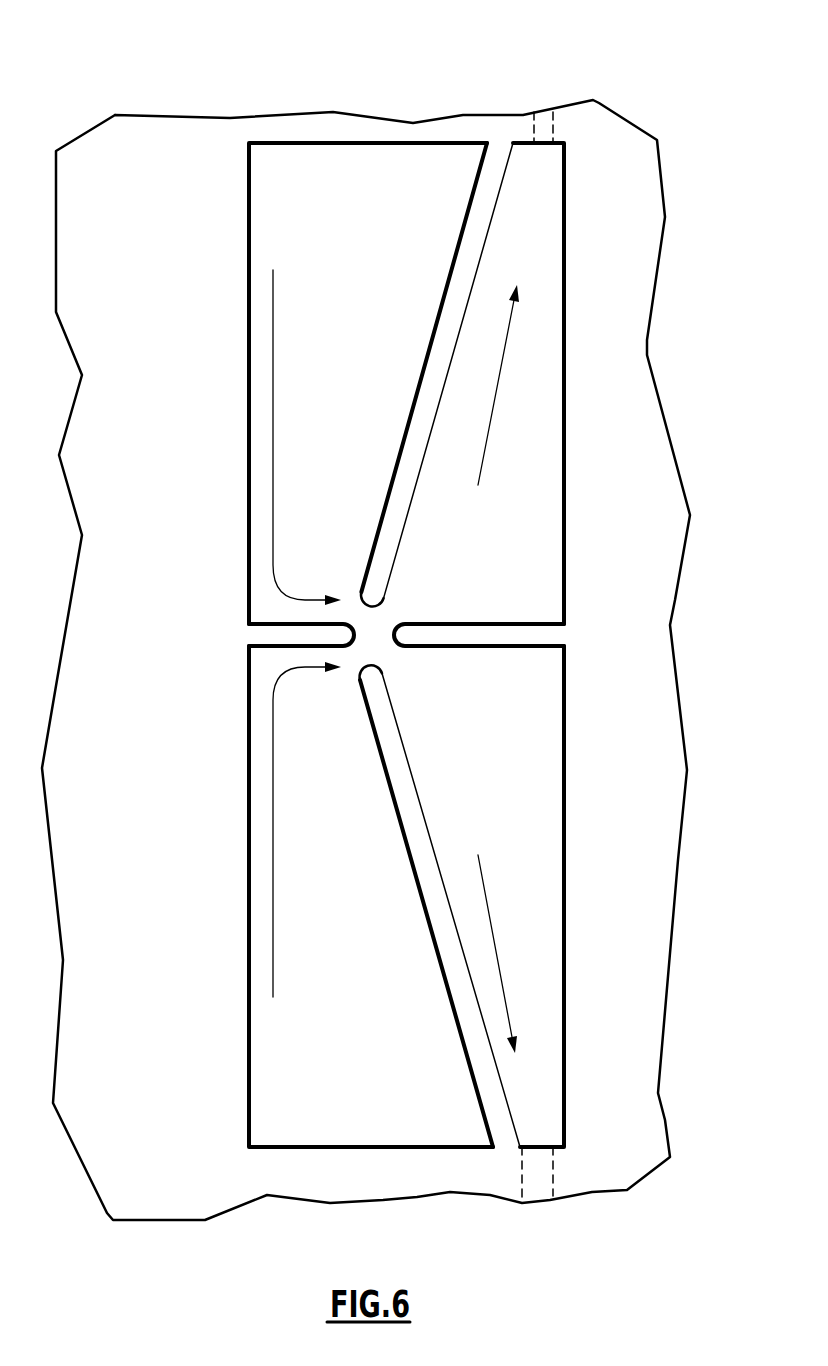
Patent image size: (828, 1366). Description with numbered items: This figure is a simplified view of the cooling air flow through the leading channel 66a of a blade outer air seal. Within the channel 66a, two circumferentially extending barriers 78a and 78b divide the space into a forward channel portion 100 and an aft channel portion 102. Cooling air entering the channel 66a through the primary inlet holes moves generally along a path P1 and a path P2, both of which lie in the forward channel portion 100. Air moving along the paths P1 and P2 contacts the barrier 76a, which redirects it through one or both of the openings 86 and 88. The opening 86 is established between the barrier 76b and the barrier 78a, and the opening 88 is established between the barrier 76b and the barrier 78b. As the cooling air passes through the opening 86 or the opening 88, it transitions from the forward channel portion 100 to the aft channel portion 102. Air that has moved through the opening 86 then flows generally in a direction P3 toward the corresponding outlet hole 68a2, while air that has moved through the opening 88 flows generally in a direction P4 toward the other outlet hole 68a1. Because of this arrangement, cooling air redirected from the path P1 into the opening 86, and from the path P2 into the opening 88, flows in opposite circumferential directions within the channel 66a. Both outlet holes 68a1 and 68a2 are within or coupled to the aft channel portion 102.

The forward channel portion 100 is at (288, 104).
The aft channel portion 102 is at (594, 74).
The channel 66a is at (372, 200).
The outlet hole 68a1 is at (547, 1183).
The outlet hole 68a2 is at (553, 132).
The barrier 76a is at (281, 638).
The barrier 76b is at (540, 633).
The circumferentially extending barrier 78a is at (480, 207).
The circumferentially extending barrier 78b is at (488, 1087).
The opening 86 is at (420, 597).
The opening 88 is at (410, 672).
The path P1 is at (273, 463).
The path P2 is at (273, 867).
The direction P3 is at (489, 430).
The direction P4 is at (489, 907).